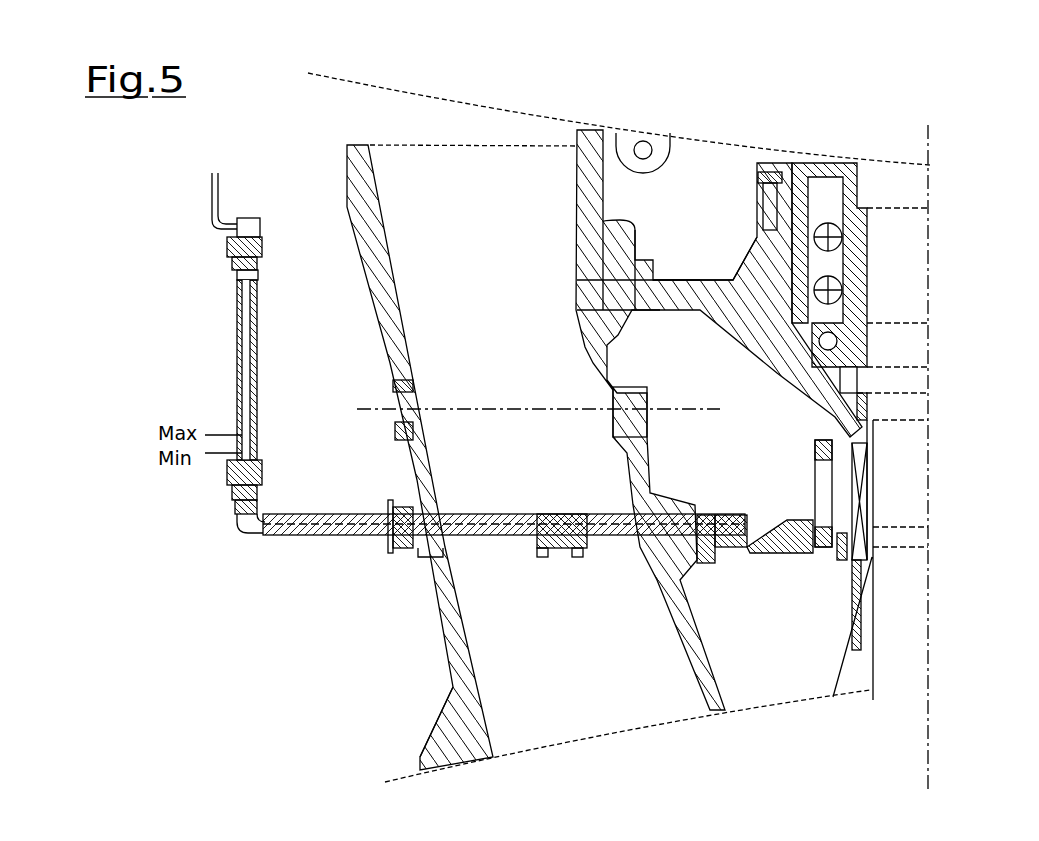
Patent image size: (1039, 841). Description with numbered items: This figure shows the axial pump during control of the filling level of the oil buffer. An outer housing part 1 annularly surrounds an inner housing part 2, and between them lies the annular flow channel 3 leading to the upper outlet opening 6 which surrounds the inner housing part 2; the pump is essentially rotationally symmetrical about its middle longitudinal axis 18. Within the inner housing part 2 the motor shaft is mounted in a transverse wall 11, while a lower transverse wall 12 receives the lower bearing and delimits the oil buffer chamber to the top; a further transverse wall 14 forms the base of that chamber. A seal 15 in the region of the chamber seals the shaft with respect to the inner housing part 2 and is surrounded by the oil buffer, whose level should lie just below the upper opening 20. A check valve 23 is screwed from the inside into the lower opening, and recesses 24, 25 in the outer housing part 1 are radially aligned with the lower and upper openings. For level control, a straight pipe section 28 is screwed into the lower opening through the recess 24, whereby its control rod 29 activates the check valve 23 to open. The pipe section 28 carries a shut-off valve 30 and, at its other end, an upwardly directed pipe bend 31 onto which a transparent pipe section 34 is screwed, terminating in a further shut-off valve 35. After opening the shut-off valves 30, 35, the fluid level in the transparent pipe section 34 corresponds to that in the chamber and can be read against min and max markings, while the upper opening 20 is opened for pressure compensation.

The outer housing part 1 is at (383, 267).
The inner housing part 2 is at (577, 217).
The flow channel 3 is at (508, 322).
The outlet opening 6 is at (487, 147).
The transverse wall 11 is at (900, 623).
The transverse wall 12 is at (660, 282).
The transverse wall 14 is at (732, 560).
The seal 15 is at (857, 493).
The middle longitudinal axis 18 is at (930, 353).
The upper opening 20 is at (620, 409).
The check valve 23 is at (773, 547).
The recess 24 is at (420, 540).
The recess 25 is at (393, 422).
The pipe section 28 is at (337, 527).
The control rod 29 is at (695, 563).
The shut-off valve 30 is at (553, 548).
The pipe bend 31 is at (243, 520).
The transparent pipe section 34 is at (237, 320).
The shut-off valve 35 is at (257, 243).